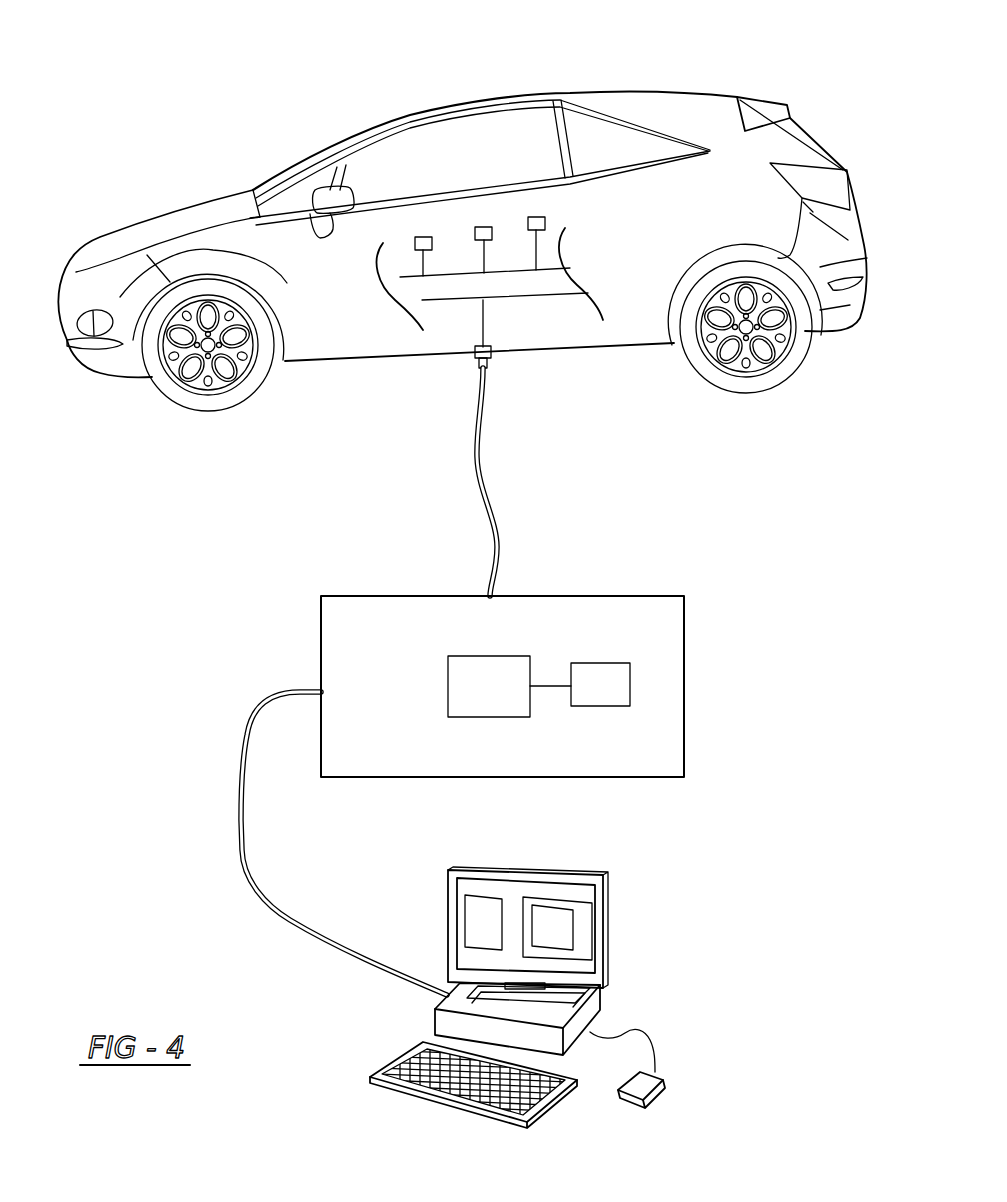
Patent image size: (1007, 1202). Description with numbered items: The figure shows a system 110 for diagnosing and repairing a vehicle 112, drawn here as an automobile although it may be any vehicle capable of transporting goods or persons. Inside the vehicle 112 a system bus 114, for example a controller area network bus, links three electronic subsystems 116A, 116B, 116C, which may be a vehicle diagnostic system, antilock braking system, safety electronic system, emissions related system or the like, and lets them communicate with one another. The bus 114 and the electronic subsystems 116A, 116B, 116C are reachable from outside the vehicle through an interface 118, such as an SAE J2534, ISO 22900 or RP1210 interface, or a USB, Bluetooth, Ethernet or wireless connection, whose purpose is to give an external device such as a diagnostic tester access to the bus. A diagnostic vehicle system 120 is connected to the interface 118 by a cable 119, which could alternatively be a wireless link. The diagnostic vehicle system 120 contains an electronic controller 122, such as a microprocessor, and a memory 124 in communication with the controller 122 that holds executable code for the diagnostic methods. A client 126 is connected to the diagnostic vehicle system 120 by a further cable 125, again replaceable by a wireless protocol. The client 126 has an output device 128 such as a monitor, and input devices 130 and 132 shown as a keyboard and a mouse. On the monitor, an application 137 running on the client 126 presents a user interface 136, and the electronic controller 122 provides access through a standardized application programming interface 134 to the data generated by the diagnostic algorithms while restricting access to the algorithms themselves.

The system 110 is at (114, 131).
The vehicle 112 is at (665, 90).
The system bus 114 is at (520, 283).
The electronic subsystem 116A is at (420, 237).
The electronic subsystem 116B is at (484, 227).
The electronic subsystem 116C is at (536, 217).
The interface 118 is at (473, 360).
The cable 119 is at (487, 468).
The diagnostic vehicle system 120 is at (613, 597).
The electronic controller 122 is at (495, 705).
The memory 124 is at (623, 683).
The cable 125 is at (249, 870).
The client 126 is at (605, 1008).
The output device 128 is at (606, 933).
The input device 130 is at (447, 1100).
The input device 132 is at (628, 1103).
The application programming interface 134 is at (466, 918).
The user interface 136 is at (560, 925).
The application 137 is at (547, 898).